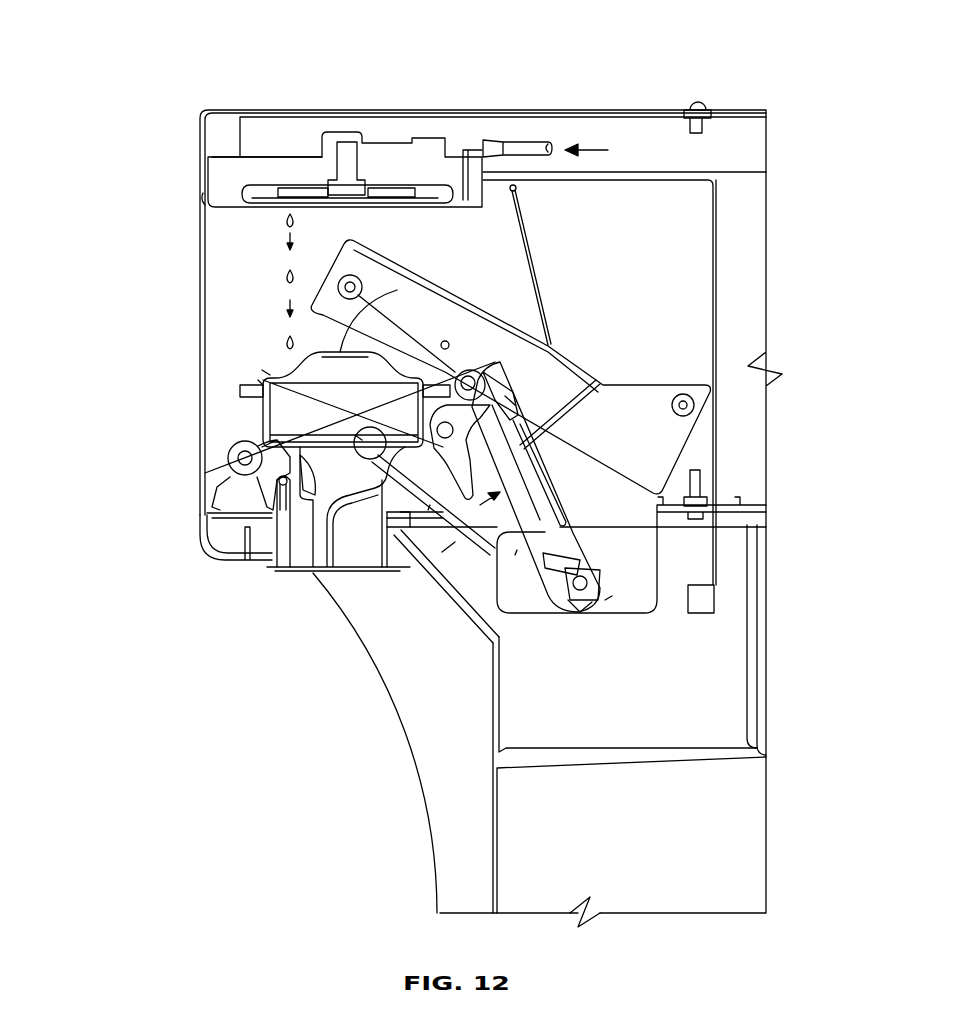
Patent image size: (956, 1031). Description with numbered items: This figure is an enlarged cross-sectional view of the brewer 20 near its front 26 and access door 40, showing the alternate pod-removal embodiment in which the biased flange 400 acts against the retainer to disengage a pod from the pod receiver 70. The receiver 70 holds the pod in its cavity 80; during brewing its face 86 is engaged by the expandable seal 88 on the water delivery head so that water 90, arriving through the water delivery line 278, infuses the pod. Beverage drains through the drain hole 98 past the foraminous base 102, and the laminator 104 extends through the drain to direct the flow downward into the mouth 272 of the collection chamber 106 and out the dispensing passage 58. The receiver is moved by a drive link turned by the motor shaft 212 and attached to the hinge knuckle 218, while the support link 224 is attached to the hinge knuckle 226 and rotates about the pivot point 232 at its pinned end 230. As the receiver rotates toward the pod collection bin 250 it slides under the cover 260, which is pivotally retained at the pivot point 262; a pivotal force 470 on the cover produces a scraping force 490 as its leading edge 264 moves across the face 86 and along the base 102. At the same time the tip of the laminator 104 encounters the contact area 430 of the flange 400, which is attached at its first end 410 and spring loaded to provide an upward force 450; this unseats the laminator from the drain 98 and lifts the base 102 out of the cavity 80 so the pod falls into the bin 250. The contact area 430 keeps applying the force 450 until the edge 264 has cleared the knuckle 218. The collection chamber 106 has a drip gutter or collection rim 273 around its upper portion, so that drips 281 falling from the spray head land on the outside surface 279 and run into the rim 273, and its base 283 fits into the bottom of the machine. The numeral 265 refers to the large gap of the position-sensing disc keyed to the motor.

The beverage maker or brewer 20 is at (165, 46).
The front 26 is at (228, 678).
The access door 40 is at (205, 292).
The dispensing passage 58 is at (315, 567).
The pod receiver 70 is at (608, 598).
The cavity 80 is at (564, 535).
The face 86 is at (498, 392).
The expandable seal 88 is at (442, 185).
The water 90 is at (590, 150).
The drain hole 98 is at (466, 534).
The foraminous bottom or base 102 is at (551, 497).
The laminator 104 is at (573, 592).
The collection chamber 106 is at (262, 420).
The shaft 212 is at (443, 428).
The hinge knuckle 218 is at (588, 572).
The support link 224 is at (260, 521).
The hinge knuckle 226 is at (463, 374).
The pinned end 230 is at (243, 458).
The pivot point 232 is at (225, 460).
The pod collection bin 250 is at (493, 796).
The cover 260 is at (553, 327).
The pivot point 262 is at (520, 188).
The leading edge 264 is at (522, 425).
The large gap 265 is at (377, 399).
The mouth 272 is at (345, 352).
The drip gutter or collection rim 273 is at (262, 395).
The water delivery line 278 is at (512, 140).
The outside surface 279 is at (360, 437).
The drips 281 is at (287, 274).
The base 283 is at (275, 545).
The biased flange 400 is at (420, 556).
The first end 410 is at (362, 447).
The contact area 430 is at (430, 502).
The biased force 450 is at (460, 537).
The pivotal force 470 is at (513, 297).
The scraping force 490 is at (505, 398).